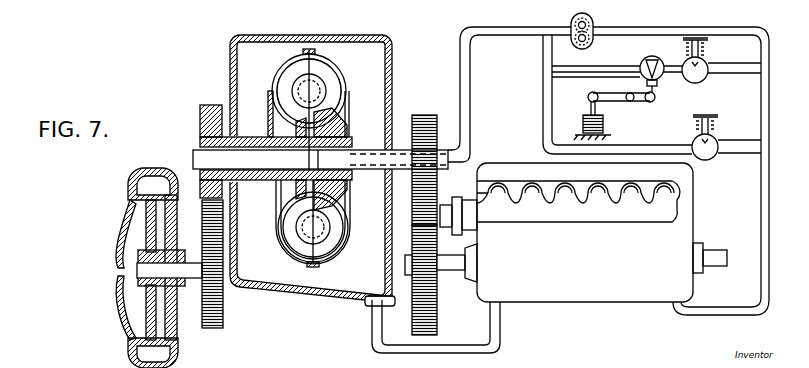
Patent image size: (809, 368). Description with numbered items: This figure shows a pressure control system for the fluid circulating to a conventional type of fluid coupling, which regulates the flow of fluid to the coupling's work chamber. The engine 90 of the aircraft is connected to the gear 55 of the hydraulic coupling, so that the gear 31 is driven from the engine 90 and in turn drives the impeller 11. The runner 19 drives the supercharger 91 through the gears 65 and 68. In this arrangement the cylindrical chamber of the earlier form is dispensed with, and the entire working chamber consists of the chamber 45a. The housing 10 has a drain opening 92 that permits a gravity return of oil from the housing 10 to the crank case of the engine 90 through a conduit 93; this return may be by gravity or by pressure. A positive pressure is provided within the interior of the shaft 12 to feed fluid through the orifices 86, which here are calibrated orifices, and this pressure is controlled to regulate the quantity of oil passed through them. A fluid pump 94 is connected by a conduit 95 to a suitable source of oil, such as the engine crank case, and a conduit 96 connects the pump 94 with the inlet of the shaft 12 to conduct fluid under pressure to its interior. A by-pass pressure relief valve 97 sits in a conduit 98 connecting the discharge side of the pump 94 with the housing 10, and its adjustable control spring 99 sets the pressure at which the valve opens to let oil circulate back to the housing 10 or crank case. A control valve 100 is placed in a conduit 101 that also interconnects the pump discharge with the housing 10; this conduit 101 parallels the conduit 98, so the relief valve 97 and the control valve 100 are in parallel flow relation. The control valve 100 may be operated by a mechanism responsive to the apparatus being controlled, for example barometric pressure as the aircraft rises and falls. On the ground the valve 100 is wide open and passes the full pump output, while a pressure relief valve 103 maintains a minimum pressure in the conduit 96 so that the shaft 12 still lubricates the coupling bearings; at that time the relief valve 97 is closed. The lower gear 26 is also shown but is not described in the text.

The housing 10 is at (232, 54).
The impeller 11 is at (331, 78).
The shaft 12 is at (195, 158).
The runner 19 is at (270, 86).
The lower gear 26 is at (262, 182).
The gear 31 is at (424, 115).
The chamber 45a is at (334, 102).
The gear 55 is at (437, 308).
The gear 65 is at (200, 112).
The gear 68 is at (224, 318).
The orifices 86 is at (336, 128).
The engine 90 is at (585, 300).
The supercharger 91 is at (128, 186).
The drain opening 92 is at (373, 302).
The conduit 93 is at (468, 346).
The fluid pump 94 is at (594, 20).
The conduit 95 is at (760, 102).
The conduit 96 is at (470, 78).
The by-pass pressure relief valve 97 is at (717, 152).
The conduit 98 is at (655, 146).
The adjustable control spring 99 is at (716, 122).
The control valve 100 is at (660, 52).
The conduit 101 is at (626, 58).
The pressure relief valve 103 is at (704, 61).